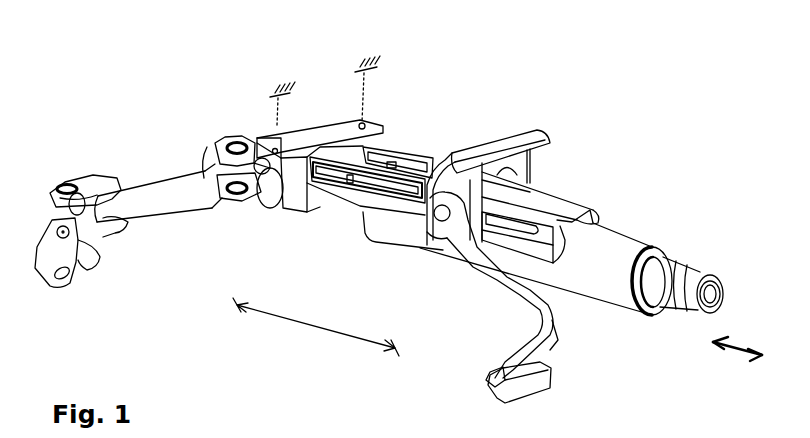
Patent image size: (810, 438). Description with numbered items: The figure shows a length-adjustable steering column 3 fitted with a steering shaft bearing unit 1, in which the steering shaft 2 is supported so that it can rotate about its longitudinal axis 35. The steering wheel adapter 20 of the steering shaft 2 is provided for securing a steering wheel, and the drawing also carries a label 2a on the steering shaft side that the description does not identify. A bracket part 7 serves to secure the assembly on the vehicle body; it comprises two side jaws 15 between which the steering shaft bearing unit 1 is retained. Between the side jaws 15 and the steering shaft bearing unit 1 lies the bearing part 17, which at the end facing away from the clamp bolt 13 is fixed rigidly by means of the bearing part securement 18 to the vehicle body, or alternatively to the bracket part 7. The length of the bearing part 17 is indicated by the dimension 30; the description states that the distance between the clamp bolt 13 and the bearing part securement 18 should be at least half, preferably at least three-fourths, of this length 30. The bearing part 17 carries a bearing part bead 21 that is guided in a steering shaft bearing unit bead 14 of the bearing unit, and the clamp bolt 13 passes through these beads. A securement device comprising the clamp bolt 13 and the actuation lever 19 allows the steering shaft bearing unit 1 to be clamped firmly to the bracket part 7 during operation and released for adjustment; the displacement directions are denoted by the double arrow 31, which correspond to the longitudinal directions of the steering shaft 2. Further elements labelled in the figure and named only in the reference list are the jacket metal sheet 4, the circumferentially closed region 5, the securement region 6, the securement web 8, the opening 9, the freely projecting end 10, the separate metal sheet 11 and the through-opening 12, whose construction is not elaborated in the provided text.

The steering shaft bearing unit 1 is at (611, 243).
The steering shaft 2 is at (138, 200).
The universal joint 2a is at (199, 148).
The steering column 3 is at (705, 128).
The jacket metal sheet 4 is at (654, 314).
The circumferentially closed region 5 is at (373, 228).
The securement region 6 is at (515, 222).
The bracket part 7 is at (519, 160).
The securement web 8 is at (586, 210).
The opening 9 is at (552, 237).
The freely projecting end 10 is at (545, 216).
The separate metal sheet 11 is at (489, 168).
The through-opening 12 is at (465, 233).
The clamp bolt 13 is at (433, 227).
The steering shaft bearing unit bead 14 is at (507, 310).
The side jaw 15 is at (449, 182).
The bearing part 17 is at (305, 168).
The bearing part securement 18 is at (320, 125).
The actuation lever 19 is at (558, 340).
The steering wheel adapter 20 is at (693, 280).
The bearing part bead 21 is at (383, 160).
The length 30 is at (318, 330).
The longitudinal directions 31 is at (727, 353).
The longitudinal axis 35 is at (737, 300).